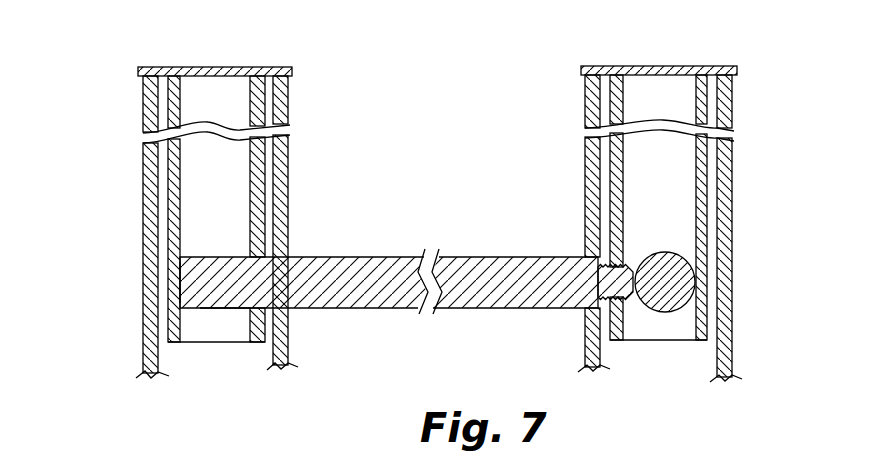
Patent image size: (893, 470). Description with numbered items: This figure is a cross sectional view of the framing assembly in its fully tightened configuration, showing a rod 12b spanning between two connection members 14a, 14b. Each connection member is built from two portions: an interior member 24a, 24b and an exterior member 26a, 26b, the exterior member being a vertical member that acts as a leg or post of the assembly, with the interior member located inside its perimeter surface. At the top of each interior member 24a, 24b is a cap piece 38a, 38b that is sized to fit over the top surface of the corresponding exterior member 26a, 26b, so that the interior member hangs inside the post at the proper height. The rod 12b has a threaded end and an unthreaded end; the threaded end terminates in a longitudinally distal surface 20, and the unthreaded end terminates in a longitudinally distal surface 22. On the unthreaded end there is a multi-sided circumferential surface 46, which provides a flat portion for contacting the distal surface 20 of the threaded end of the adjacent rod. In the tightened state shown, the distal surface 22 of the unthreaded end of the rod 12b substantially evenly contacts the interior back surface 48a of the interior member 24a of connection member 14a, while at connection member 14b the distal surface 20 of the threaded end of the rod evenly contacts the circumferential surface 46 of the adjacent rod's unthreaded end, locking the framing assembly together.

The rod 12b is at (372, 257).
The connection member 14a is at (112, 78).
The connection member 14b is at (758, 80).
The longitudinally distal surface 20 is at (662, 312).
The longitudinally distal surface 22 is at (180, 293).
The interior member 24a is at (168, 180).
The interior member 24b is at (707, 183).
The exterior member 26a is at (290, 185).
The exterior member 26b is at (732, 162).
The cap piece 38a is at (289, 67).
The cap piece 38b is at (593, 65).
The multi-sided circumferential surface 46 is at (225, 310).
The interior back surface 48a is at (180, 240).